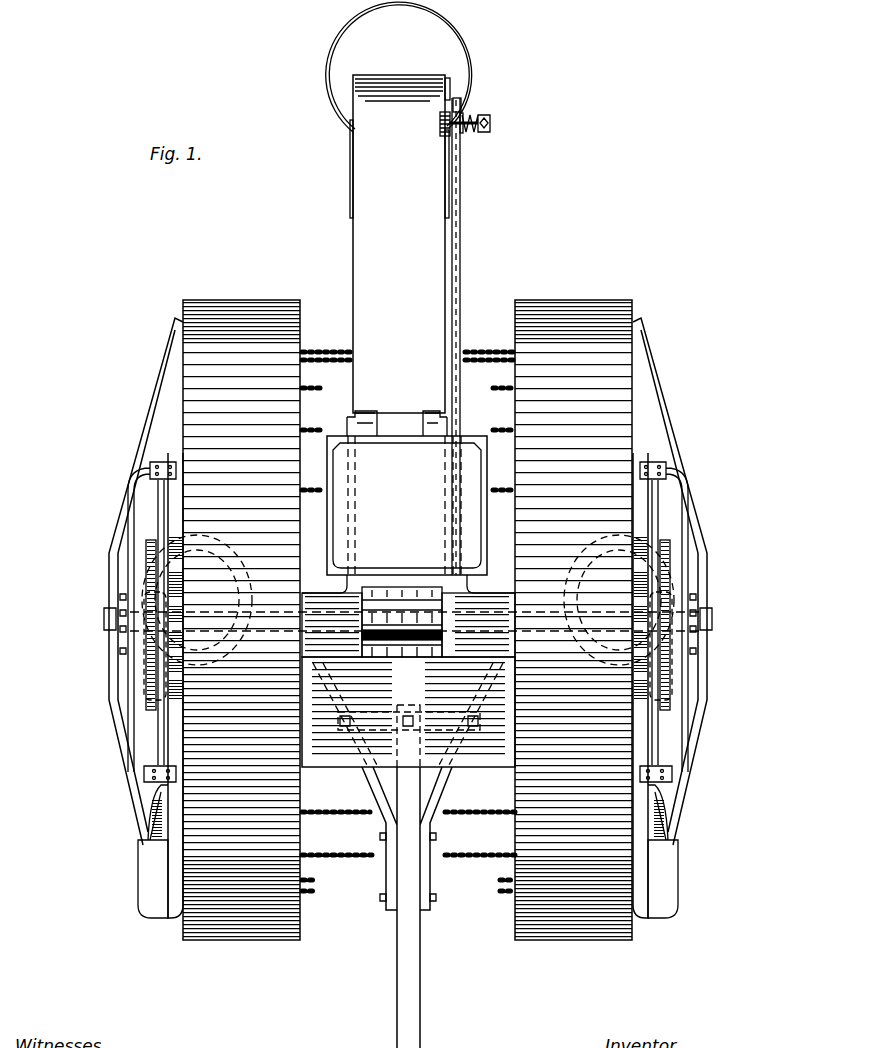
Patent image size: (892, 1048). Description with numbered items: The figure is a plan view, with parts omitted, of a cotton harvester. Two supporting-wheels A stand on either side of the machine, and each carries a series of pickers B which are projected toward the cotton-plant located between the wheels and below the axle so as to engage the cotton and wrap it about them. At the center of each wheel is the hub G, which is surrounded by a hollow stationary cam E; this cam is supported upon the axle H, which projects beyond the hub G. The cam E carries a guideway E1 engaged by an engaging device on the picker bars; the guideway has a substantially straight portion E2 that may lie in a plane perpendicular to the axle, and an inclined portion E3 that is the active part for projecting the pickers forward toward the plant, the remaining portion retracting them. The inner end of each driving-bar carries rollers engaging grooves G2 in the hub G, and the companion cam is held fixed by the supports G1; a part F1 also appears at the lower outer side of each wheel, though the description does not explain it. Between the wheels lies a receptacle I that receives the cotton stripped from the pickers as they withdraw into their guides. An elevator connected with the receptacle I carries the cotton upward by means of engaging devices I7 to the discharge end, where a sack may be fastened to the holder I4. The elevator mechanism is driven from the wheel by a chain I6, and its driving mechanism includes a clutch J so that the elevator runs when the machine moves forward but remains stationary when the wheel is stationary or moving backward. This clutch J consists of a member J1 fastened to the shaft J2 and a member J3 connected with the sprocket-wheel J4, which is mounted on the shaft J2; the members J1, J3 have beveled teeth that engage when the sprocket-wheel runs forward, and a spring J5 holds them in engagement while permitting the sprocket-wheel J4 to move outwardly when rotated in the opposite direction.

The holder I4 is at (343, 37).
The clutch member J3 is at (447, 78).
The sprocket-wheel J4 is at (456, 108).
The clutch J is at (465, 108).
The shaft J2 is at (492, 122).
The clutch member J1 is at (446, 126).
The spring J5 is at (470, 130).
The chain I6 is at (462, 250).
The pickers B is at (495, 430).
The supporting-wheels A is at (407, 620).
The supports G1 is at (690, 512).
The receptacle I is at (330, 600).
The hub G is at (180, 655).
The cam E is at (680, 610).
The grooves G2 is at (182, 640).
The straight portion of guideway E2 is at (135, 655).
The guideway E1 is at (135, 680).
The axle H is at (385, 712).
The engaging devices I7 is at (432, 618).
The inclined portion of guideway E3 is at (180, 690).
The foot F1 is at (150, 822).